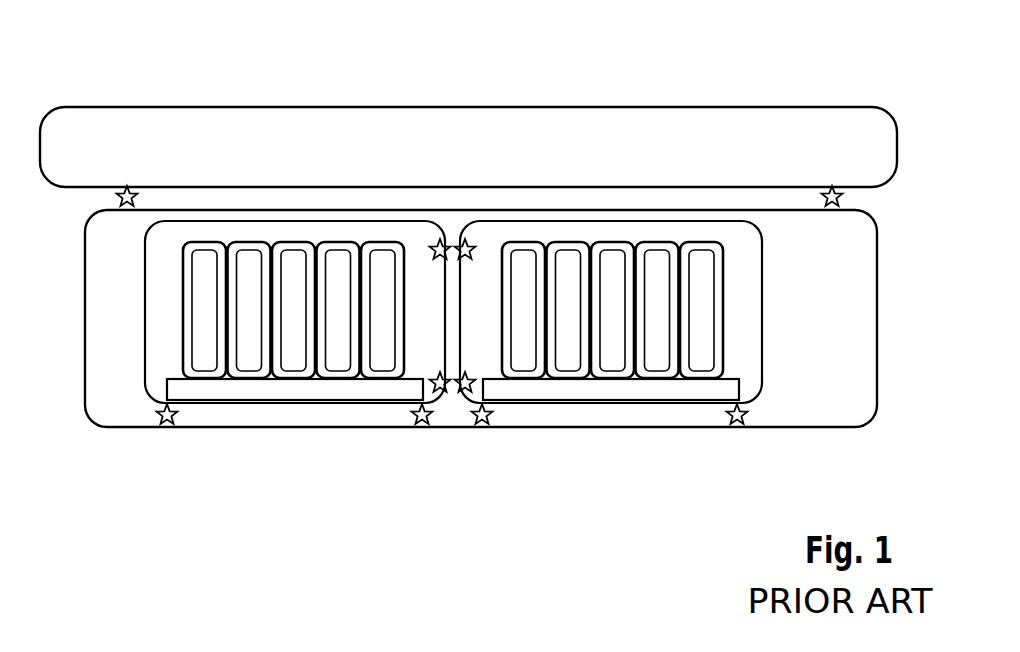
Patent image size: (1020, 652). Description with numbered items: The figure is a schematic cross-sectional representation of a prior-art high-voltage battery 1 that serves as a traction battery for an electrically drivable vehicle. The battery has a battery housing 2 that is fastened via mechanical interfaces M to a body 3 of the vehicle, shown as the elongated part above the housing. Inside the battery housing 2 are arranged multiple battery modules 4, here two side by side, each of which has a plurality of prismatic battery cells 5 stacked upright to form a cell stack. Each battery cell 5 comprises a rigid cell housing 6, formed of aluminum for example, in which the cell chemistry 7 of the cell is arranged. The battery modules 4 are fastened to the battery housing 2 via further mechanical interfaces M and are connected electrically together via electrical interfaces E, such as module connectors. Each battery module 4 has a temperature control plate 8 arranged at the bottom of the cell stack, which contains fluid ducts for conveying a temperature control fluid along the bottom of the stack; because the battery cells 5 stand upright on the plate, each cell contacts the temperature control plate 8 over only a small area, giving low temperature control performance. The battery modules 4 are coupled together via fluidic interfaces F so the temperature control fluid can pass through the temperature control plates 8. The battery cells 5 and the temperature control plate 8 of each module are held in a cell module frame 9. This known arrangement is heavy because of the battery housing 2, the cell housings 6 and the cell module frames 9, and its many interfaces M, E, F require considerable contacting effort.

The high-voltage battery 1 is at (885, 352).
The battery housing 2 is at (820, 428).
The body 3 is at (372, 107).
The battery module 4 is at (451, 219).
The battery cell 5 is at (206, 246).
The cell housing 6 is at (250, 247).
The cell chemistry 7 is at (296, 275).
The temperature control plate 8 is at (323, 392).
The cell module frame 9 is at (145, 303).
The electrical interface E is at (440, 239).
The fluidic interface F is at (450, 392).
The mechanical interface M is at (127, 186).